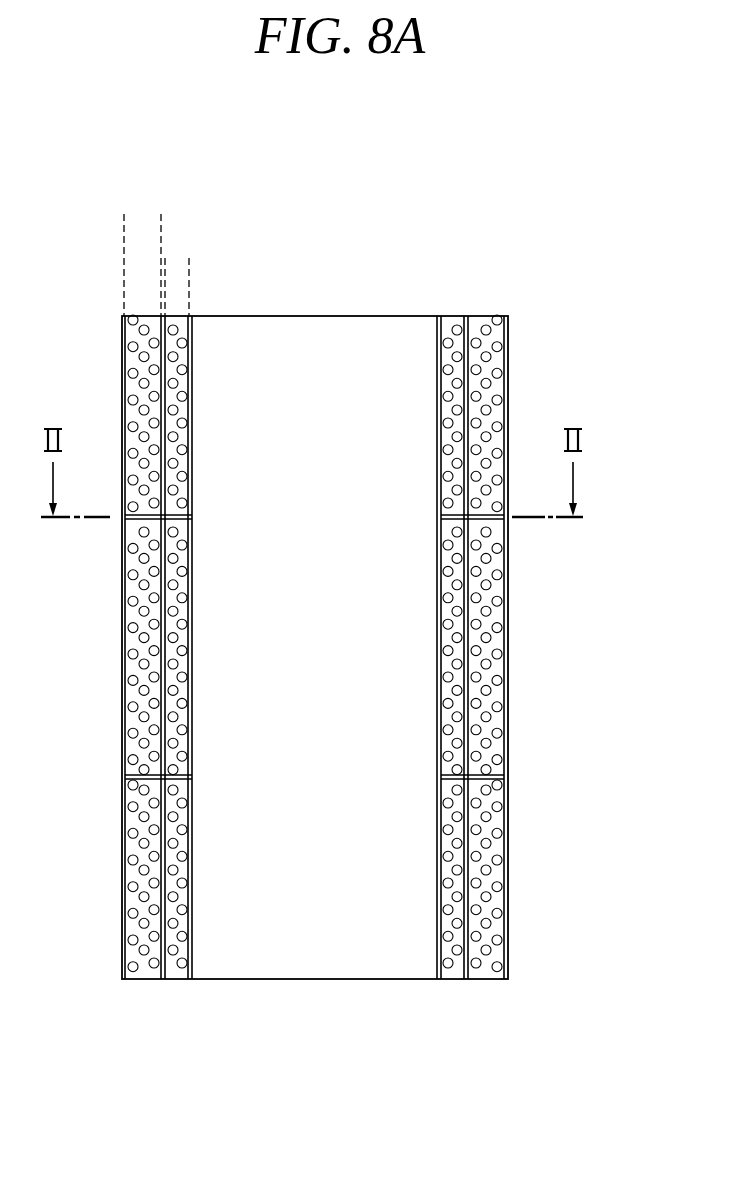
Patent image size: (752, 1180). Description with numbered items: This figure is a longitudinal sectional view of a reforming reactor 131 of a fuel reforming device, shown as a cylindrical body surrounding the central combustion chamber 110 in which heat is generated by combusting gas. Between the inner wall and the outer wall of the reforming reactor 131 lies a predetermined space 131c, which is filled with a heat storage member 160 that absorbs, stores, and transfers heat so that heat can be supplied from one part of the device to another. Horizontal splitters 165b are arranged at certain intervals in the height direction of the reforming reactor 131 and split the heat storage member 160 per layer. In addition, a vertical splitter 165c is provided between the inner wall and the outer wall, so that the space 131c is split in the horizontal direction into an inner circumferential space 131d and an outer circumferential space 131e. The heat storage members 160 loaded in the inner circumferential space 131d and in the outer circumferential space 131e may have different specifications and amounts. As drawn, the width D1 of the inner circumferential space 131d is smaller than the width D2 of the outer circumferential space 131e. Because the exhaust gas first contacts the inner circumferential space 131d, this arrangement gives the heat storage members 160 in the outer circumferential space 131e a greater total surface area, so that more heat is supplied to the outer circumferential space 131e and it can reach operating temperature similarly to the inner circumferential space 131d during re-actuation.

The combustion chamber 110 is at (312, 479).
The reforming reactor 131 is at (515, 587).
The space 131c is at (471, 587).
The inner circumferential space 131d is at (455, 348).
The outer circumferential space 131e is at (498, 610).
The heat storage member 160 is at (462, 641).
The vertical splitter 165c is at (467, 715).
The horizontal splitter 165b is at (475, 776).
The width of the inner circumferential space D1 is at (135, 268).
The width of the outer circumferential space D2 is at (190, 223).